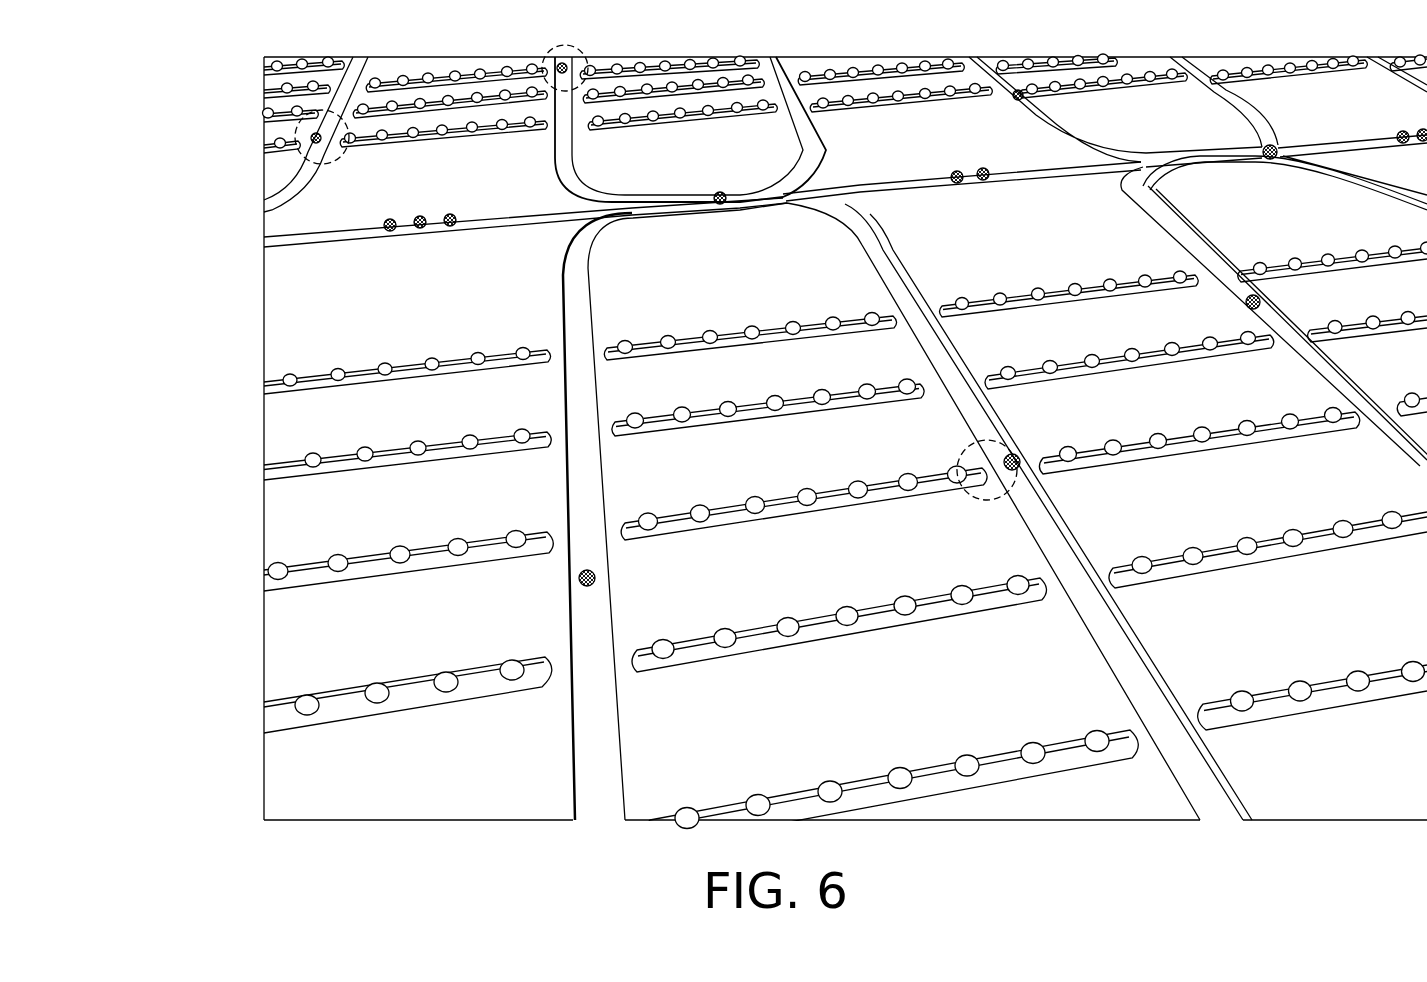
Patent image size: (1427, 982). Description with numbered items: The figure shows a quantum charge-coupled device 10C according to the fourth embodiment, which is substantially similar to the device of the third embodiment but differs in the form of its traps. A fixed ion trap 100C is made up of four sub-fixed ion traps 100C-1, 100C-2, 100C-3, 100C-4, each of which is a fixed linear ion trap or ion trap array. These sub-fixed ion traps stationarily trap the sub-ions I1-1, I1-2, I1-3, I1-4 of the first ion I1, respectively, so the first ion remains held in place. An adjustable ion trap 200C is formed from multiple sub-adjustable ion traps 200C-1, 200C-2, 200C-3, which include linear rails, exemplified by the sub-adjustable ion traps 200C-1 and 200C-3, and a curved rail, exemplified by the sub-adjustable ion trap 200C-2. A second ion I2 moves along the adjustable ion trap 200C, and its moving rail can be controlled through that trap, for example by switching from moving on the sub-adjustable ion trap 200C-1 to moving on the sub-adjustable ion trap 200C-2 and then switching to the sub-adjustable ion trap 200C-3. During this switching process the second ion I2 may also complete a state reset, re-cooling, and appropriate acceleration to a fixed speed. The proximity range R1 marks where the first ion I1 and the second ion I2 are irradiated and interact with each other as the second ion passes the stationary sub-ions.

The quantum charge-coupled device 10C is at (754, 440).
The fixed ion trap 100C is at (320, 541).
The sub-fixed ion trap 100C-1 is at (264, 390).
The sub-fixed ion trap 100C-2 is at (264, 474).
The sub-fixed ion trap 100C-3 is at (264, 581).
The sub-fixed ion trap 100C-4 is at (264, 715).
The adjustable ion trap 200C is at (754, 512).
The sub-adjustable ion trap 200C-1 is at (1215, 808).
The sub-adjustable ion trap 200C-2 is at (868, 238).
The sub-adjustable ion trap 200C-3 is at (264, 242).
The first ion I1 is at (461, 493).
The sub-ion I1-1 is at (523, 349).
The sub-ion I1-2 is at (522, 431).
The sub-ion I1-3 is at (516, 533).
The sub-ion I1-4 is at (512, 664).
The second ion I2 is at (1010, 470).
The proximity range R1 is at (656, 275).